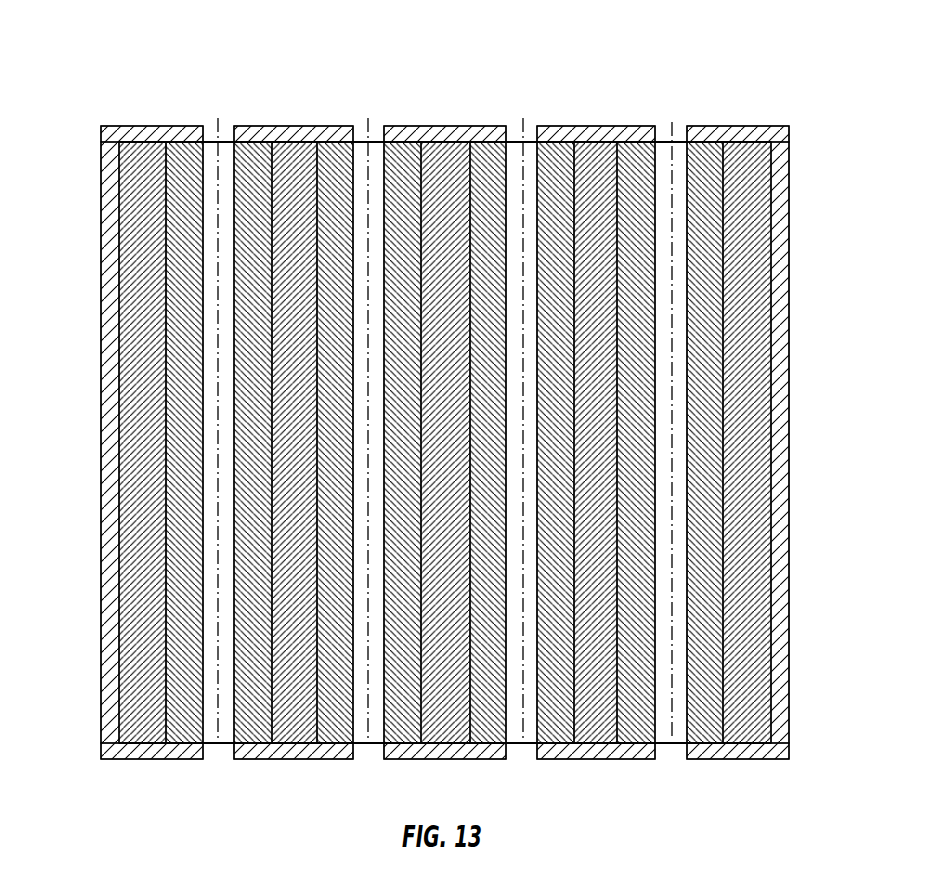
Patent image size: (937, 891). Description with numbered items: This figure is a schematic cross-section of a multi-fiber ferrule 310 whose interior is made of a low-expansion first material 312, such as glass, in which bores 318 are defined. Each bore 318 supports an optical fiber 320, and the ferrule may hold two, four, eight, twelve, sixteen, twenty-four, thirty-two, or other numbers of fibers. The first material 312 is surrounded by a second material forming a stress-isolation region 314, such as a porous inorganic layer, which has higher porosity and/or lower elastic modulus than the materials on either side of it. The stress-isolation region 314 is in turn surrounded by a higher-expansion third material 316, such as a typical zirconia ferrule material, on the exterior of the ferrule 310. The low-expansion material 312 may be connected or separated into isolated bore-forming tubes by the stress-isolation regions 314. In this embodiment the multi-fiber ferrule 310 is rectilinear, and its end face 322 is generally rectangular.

The multi-fiber ferrule 310 is at (169, 48).
The low-expansion material 312 is at (253, 140).
The stress-isolation region 314 is at (148, 128).
The higher-expansion material 316 is at (265, 128).
The bore 318 is at (537, 732).
The optical fiber 320 is at (673, 122).
The end face 322 is at (605, 114).